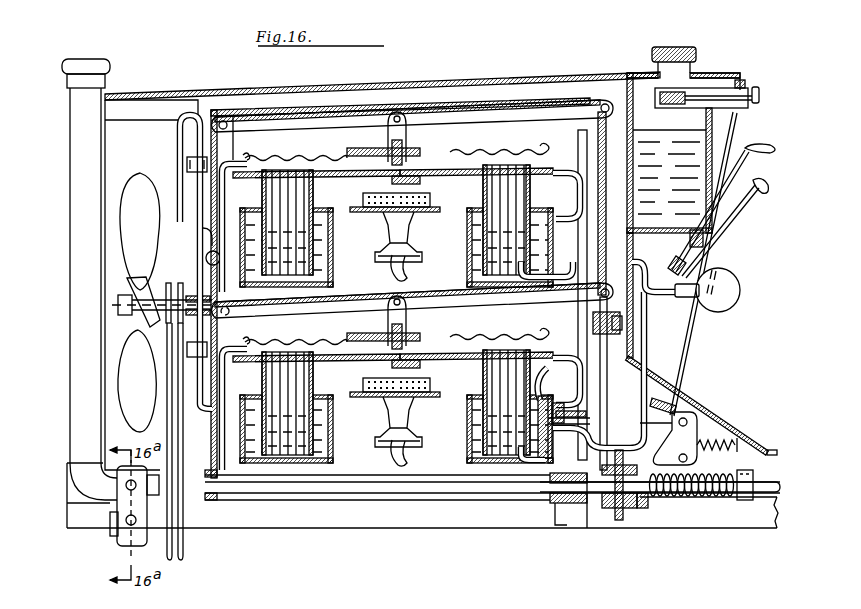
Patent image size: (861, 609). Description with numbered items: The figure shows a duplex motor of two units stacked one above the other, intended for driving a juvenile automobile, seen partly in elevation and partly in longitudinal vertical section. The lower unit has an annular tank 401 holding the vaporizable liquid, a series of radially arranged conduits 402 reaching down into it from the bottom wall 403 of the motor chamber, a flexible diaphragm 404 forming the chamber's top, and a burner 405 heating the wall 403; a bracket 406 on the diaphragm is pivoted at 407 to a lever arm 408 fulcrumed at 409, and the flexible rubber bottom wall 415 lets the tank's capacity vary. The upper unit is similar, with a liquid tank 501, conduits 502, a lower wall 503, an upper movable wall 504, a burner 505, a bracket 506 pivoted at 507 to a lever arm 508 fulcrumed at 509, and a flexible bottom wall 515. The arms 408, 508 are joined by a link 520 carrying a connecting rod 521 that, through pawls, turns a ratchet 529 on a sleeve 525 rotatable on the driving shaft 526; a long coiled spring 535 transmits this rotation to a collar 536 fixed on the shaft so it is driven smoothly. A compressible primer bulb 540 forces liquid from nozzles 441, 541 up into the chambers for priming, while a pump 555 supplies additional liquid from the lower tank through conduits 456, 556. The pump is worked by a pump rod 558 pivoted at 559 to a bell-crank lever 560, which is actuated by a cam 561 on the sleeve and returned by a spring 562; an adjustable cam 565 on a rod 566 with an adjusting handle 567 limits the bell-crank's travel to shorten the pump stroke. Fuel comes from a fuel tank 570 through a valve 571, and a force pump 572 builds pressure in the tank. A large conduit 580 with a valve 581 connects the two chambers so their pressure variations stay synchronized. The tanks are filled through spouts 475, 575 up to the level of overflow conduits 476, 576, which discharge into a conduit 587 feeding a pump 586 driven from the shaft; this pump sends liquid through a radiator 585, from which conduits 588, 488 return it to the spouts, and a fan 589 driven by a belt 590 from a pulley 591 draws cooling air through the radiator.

The annular tank 401 is at (333, 430).
The conduits 402 is at (314, 382).
The bottom wall 403 is at (336, 360).
The flexible diaphragm 404 is at (470, 340).
The burner 405 is at (430, 388).
The bracket 406 is at (408, 326).
The pivot 407 is at (408, 307).
The lever arm 408 is at (418, 376).
The fulcrum 409 is at (232, 311).
The bottom wall 415 is at (265, 468).
The nozzle 441 is at (518, 468).
The conduit 456 is at (430, 360).
The spout 475 is at (219, 377).
The overflow conduit 476 is at (575, 355).
The conduit 488 is at (201, 241).
The liquid tank 501 is at (333, 250).
The conduits 502 is at (314, 198).
The lower wall 503 is at (336, 176).
The upper movable wall 504 is at (485, 151).
The burner 505 is at (438, 200).
The bracket 506 is at (407, 136).
The pivot 507 is at (407, 117).
The lever arm 508 is at (414, 197).
The fulcrum 509 is at (228, 126).
The bottom wall 515 is at (290, 288).
The link 520 is at (610, 246).
The connecting rod 521 is at (608, 402).
The sleeve 525 is at (598, 504).
The driving shaft 526 is at (525, 490).
The ratchet 529 is at (618, 520).
The coiled spring 535 is at (692, 498).
The collar 536 is at (745, 502).
The primer bulb 540 is at (740, 287).
The nozzle 541 is at (518, 268).
The pump 555 is at (564, 427).
The conduit 556 is at (433, 174).
The pump rod 558 is at (690, 432).
The pivot 559 is at (702, 412).
The bell-crank lever 560 is at (728, 422).
The cam 561 is at (646, 506).
The spring 562 is at (712, 452).
The adjustable cam 565 is at (655, 400).
The rod 566 is at (700, 352).
The adjusting handle 567 is at (757, 158).
The fuel tank 570 is at (712, 140).
The valve 571 is at (703, 254).
The force pump 572 is at (740, 82).
The spout 575 is at (196, 172).
The overflow conduit 576 is at (573, 176).
The conduit 580 is at (227, 193).
The valve 581 is at (206, 257).
The radiator 585 is at (69, 254).
The pump 586 is at (120, 512).
The conduit 587 is at (352, 472).
The conduit 588 is at (194, 140).
The fan 589 is at (140, 231).
The belt 590 is at (170, 345).
The pulley 591 is at (184, 540).